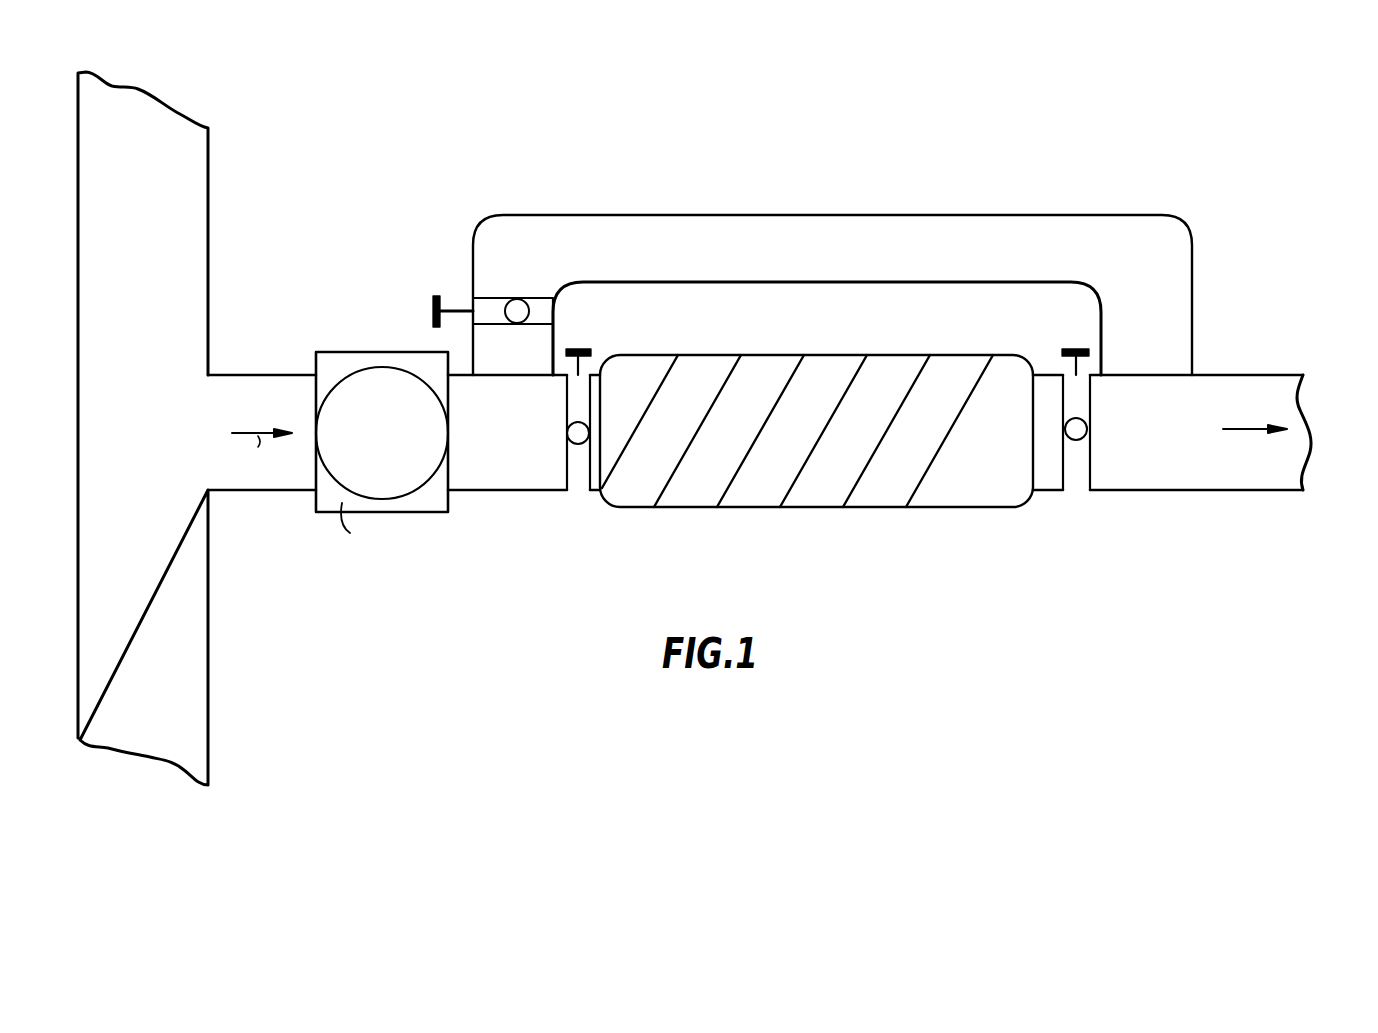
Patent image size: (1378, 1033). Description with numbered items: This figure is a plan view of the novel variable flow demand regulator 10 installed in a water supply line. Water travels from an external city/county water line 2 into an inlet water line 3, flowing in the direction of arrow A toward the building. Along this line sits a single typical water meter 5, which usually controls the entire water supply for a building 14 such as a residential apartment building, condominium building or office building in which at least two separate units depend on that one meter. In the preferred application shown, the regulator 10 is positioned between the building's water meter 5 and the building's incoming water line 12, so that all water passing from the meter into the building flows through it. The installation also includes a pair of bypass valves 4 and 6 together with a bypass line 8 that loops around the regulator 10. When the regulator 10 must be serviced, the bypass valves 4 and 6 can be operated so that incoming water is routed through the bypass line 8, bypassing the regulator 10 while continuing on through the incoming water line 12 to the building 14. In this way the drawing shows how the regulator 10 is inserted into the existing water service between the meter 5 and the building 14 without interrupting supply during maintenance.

The external city/county water line 2 is at (193, 309).
The inlet water line 3 is at (256, 390).
The bypass valve 4 is at (482, 308).
The water meter 5 is at (383, 358).
The bypass valve 6 is at (1082, 403).
The bypass line 8 is at (812, 228).
The variable flow demand regulator 10 is at (855, 443).
The building's incoming water line 12 is at (1264, 390).
The building 14 is at (1337, 432).